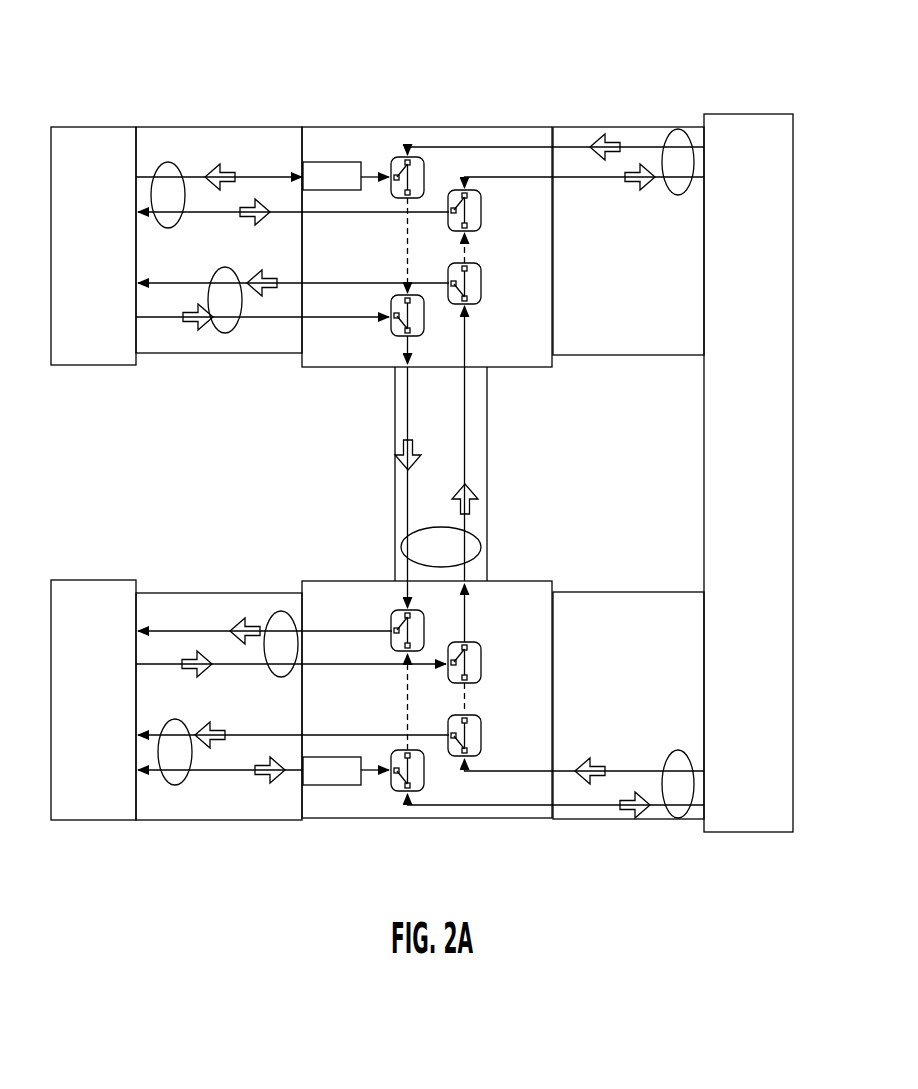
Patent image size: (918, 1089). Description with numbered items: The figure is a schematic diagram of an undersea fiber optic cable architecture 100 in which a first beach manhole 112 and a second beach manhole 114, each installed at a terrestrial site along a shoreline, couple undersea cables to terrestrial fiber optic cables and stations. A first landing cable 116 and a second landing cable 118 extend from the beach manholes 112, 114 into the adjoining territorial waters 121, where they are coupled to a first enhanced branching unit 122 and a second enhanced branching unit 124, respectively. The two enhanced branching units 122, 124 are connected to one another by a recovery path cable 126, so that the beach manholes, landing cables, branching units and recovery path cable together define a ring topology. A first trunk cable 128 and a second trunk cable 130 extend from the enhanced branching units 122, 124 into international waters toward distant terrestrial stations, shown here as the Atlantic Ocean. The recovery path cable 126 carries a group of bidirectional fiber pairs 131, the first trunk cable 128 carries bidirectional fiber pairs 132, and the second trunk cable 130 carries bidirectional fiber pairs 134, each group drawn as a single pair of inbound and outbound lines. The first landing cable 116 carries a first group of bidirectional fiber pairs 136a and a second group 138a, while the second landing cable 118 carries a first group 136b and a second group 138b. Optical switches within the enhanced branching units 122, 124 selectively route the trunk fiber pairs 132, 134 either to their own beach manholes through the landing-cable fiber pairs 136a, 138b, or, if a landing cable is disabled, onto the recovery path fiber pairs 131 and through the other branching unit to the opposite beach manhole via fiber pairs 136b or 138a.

The undersea fiber optic cable architecture 100 is at (262, 30).
The first beach manhole (BMH) 112 is at (78, 127).
The second beach manhole (BMH) 114 is at (88, 578).
The first landing cable 116 is at (237, 127).
The second landing cable 118 is at (213, 822).
The territorial waters 121 is at (141, 488).
The first enhanced branching unit (EBU) 122 is at (377, 127).
The second enhanced branching unit (EBU) 124 is at (395, 822).
The recovery path cable 126 is at (489, 495).
The first trunk cable 128 is at (607, 355).
The second trunk cable 130 is at (640, 592).
The bidirectional fiber pairs of the recovery path cable 131 is at (430, 527).
The bidirectional fiber pairs of the first trunk cable 132 is at (683, 129).
The bidirectional fiber pairs of the second trunk cable 134 is at (680, 819).
The first group of bidirectional fiber pairs of the first landing cable 136a is at (169, 162).
The first group of bidirectional fiber pairs of the second landing cable 136b is at (280, 611).
The second group of bidirectional fiber pairs of the first landing cable 138a is at (222, 333).
The second group of bidirectional fiber pairs of the second landing cable 138b is at (176, 786).